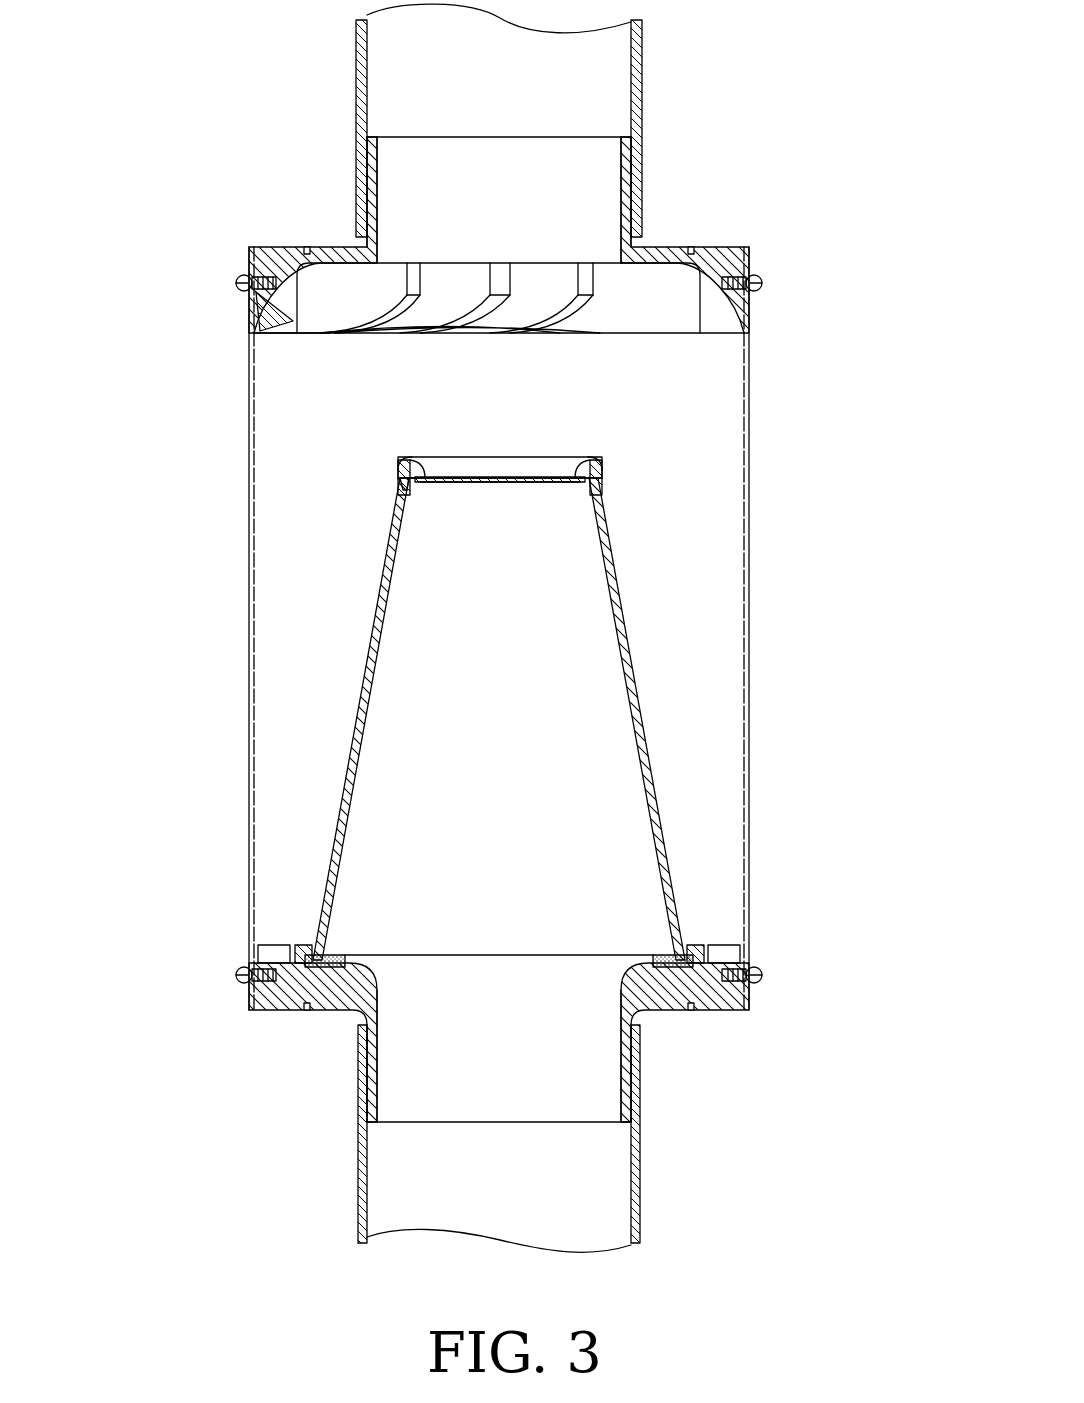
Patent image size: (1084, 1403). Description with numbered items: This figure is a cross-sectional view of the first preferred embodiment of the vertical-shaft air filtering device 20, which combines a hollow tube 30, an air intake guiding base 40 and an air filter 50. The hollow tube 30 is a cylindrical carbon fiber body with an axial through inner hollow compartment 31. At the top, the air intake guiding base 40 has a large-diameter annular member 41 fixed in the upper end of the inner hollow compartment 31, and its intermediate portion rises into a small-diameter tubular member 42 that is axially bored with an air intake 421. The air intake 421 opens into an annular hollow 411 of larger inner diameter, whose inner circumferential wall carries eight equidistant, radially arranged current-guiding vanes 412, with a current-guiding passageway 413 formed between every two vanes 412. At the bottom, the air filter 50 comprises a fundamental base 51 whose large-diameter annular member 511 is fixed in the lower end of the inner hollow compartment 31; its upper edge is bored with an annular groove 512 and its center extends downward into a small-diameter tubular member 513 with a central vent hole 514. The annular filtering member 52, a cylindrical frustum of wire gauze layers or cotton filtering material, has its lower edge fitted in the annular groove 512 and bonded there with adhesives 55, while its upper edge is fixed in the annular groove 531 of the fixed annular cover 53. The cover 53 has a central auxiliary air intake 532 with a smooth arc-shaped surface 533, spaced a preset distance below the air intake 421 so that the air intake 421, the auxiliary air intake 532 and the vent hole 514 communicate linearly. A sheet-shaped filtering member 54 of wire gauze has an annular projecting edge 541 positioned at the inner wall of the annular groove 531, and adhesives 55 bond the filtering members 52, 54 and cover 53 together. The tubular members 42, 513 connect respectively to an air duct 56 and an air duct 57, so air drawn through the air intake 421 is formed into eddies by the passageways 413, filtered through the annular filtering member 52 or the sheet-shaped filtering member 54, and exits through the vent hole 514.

The vertical-shaft air filtering device 20 is at (215, 748).
The hollow tube 30 is at (248, 885).
The inner hollow compartment 31 is at (272, 821).
The air intake guiding base 40 is at (756, 258).
The annular member 41 is at (745, 300).
The annular hollow 411 is at (290, 322).
The current-guiding vanes 412 is at (360, 335).
The current-guiding passageway 413 is at (430, 270).
The tubular member 42 is at (640, 197).
The air intake 421 is at (608, 150).
The air filter 50 is at (756, 1005).
The fundamental base 51 is at (668, 995).
The annular member 511 is at (745, 950).
The annular groove 512 is at (690, 955).
The tubular member 513 is at (645, 1052).
The vent hole 514 is at (596, 1097).
The annular filtering member 52 is at (640, 684).
The fixed annular cover 53 is at (592, 462).
The annular groove 531 is at (590, 495).
The auxiliary air intake 532 is at (444, 463).
The smooth arc-shaped surface 533 is at (576, 478).
The sheet-shaped filtering member 54 is at (443, 486).
The annular projecting edge 541 is at (405, 480).
The adhesives 55 is at (600, 466).
The air duct 56 is at (642, 50).
The air duct 57 is at (642, 1213).